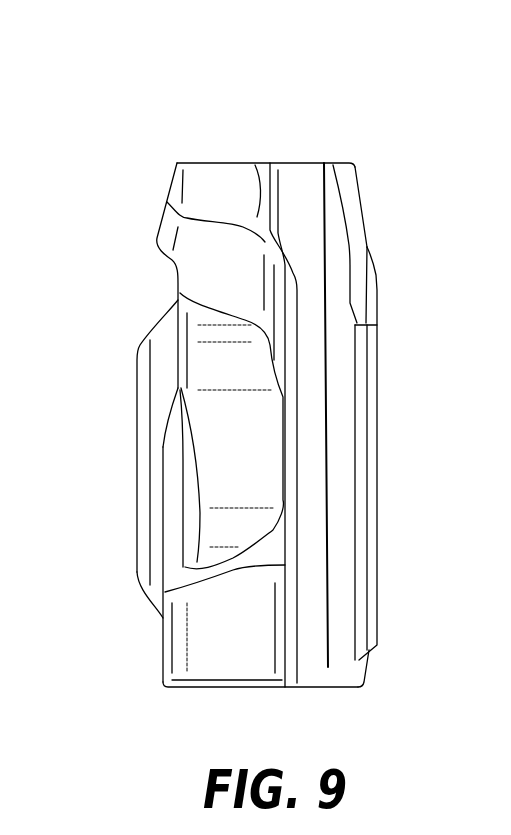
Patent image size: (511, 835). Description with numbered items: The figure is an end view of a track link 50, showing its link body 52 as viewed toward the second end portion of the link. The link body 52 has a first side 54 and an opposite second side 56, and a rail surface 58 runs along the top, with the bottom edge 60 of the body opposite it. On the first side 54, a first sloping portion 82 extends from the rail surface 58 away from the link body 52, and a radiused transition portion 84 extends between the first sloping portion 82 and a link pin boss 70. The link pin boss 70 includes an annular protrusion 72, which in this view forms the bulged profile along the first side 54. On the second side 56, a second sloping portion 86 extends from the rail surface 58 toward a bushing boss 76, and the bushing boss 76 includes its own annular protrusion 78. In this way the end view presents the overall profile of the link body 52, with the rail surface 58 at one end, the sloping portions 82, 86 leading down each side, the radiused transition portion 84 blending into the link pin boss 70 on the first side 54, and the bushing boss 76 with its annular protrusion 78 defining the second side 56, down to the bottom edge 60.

The grip body 50 is at (129, 79).
The link body 52 is at (249, 648).
The first side 54 is at (163, 670).
The second side 56 is at (368, 673).
The rail surface 58 is at (250, 165).
The bottom edge 60 is at (253, 688).
The link pin boss 70 is at (140, 543).
The annular protrusion 72 is at (147, 603).
The bushing boss 76 is at (367, 320).
The annular protrusion 78 is at (368, 252).
The first sloping portion 82 is at (167, 202).
The radiused transition portion 84 is at (178, 288).
The second sloping portion 86 is at (360, 193).